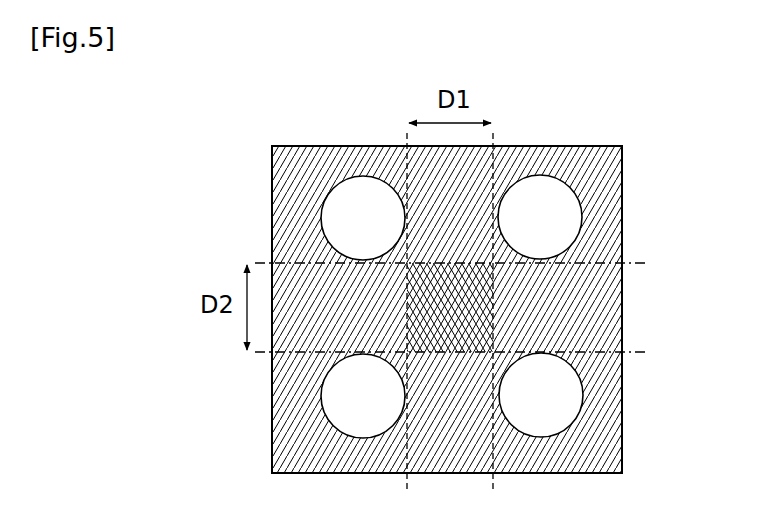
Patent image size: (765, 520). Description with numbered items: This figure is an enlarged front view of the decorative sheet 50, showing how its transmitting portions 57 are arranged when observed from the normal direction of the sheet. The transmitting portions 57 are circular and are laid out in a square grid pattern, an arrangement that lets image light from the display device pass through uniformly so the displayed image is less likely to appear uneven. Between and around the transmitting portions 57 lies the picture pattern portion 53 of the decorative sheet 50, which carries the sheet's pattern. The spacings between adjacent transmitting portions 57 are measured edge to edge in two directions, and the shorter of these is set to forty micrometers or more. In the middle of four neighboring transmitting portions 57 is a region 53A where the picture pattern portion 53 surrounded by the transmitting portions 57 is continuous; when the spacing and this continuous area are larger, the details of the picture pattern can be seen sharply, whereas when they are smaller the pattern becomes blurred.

The decorative sheet 50 is at (226, 140).
The picture pattern portion 53 is at (550, 302).
The region 53A is at (450, 300).
The transmitting portion 57 is at (545, 217).